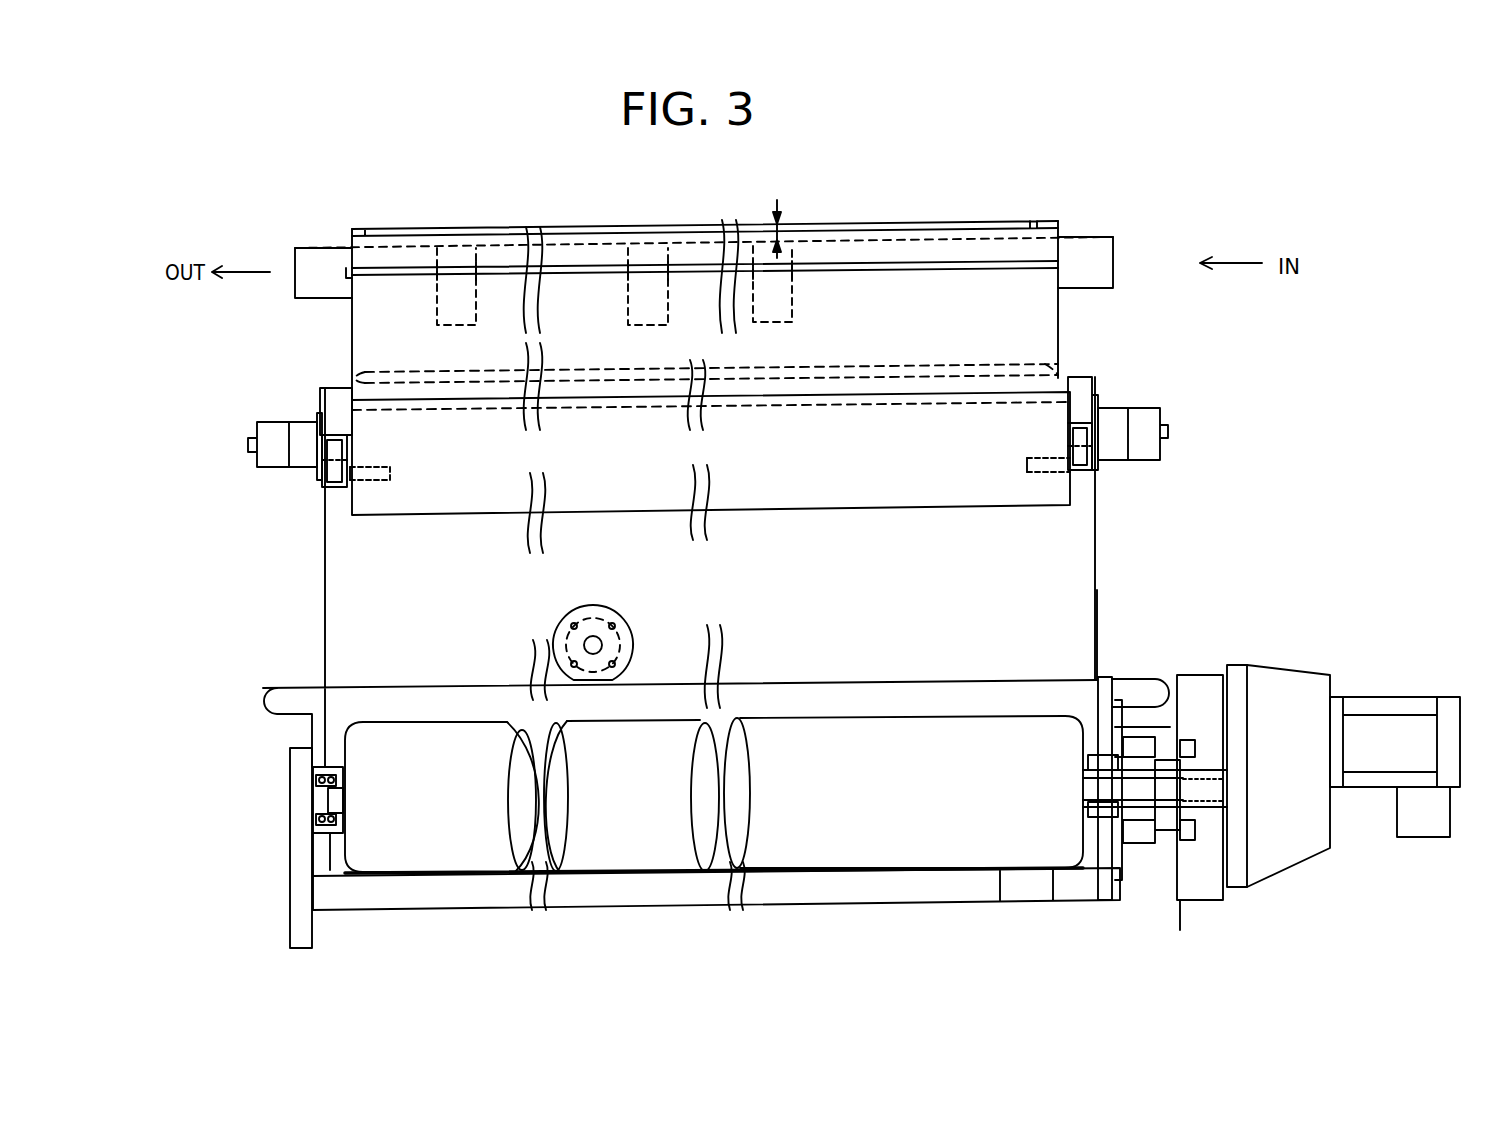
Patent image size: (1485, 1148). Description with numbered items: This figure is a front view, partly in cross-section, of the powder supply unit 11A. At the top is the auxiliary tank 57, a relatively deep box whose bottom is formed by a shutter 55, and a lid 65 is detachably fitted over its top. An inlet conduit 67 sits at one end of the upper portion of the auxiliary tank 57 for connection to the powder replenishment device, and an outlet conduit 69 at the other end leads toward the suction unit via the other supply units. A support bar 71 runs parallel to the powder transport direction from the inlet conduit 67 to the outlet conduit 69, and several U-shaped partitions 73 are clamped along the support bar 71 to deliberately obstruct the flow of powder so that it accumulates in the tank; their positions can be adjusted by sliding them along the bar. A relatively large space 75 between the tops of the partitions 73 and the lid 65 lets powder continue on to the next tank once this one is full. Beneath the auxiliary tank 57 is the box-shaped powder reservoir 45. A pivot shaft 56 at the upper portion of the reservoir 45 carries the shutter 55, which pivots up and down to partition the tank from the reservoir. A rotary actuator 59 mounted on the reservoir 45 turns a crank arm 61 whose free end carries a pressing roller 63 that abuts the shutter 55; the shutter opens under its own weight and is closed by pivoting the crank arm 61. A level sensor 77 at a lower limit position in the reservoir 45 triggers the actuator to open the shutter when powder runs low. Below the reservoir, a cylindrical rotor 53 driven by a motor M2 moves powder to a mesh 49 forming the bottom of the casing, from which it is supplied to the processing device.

The powder supply unit 11A is at (1125, 208).
The powder reservoir 45 is at (1096, 577).
The mesh 49 is at (812, 880).
The cylindrical rotor 53 is at (913, 830).
The shutter 55 is at (454, 490).
The pivot shaft 56 is at (924, 405).
The auxiliary tank 57 is at (362, 322).
The rotary actuator 59 is at (295, 420).
The crank arm 61 is at (335, 462).
The pressing roller 63 is at (372, 482).
The lid 65 is at (925, 222).
The inlet conduit 67 is at (1100, 260).
The outlet conduit 69 is at (313, 258).
The support bar 71 is at (895, 263).
The partitions 73 is at (438, 302).
The space 75 is at (782, 232).
The level sensor 77 is at (630, 658).
The motor M2 is at (1382, 700).